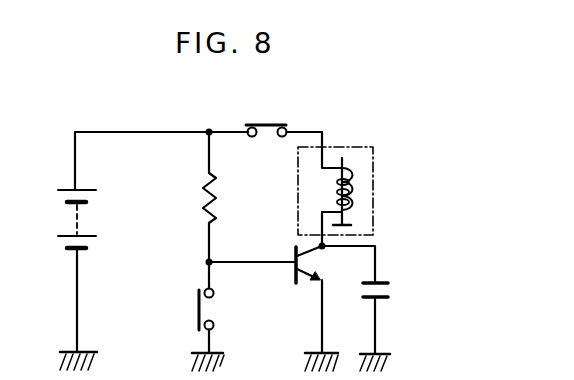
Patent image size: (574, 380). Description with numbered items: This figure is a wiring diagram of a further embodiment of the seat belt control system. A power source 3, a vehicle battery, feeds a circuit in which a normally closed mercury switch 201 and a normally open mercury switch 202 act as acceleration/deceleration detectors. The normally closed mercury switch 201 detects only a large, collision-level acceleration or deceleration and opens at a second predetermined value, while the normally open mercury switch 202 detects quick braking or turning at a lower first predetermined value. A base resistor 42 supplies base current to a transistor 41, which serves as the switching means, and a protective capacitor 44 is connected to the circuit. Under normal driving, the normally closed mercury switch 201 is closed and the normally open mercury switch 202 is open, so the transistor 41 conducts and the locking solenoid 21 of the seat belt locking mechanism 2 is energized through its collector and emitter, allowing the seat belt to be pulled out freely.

The seat belt locking mechanism 2 is at (359, 175).
The power source 3 is at (72, 221).
The locking solenoid 21 is at (352, 186).
The transistor 41 is at (304, 262).
The base resistor 42 is at (203, 188).
The protective capacitor 44 is at (390, 289).
The normally closed mercury switch 201 is at (272, 124).
The normally open mercury switch 202 is at (197, 309).